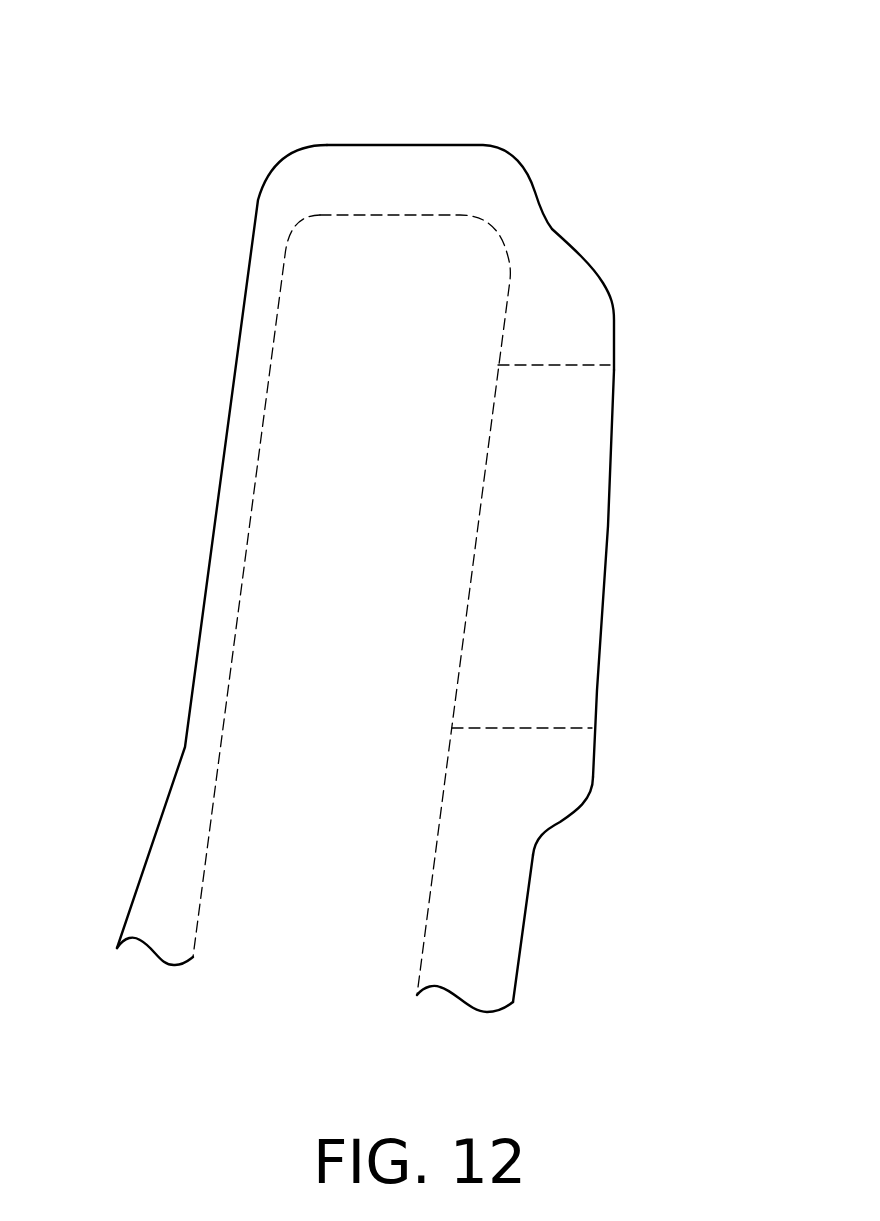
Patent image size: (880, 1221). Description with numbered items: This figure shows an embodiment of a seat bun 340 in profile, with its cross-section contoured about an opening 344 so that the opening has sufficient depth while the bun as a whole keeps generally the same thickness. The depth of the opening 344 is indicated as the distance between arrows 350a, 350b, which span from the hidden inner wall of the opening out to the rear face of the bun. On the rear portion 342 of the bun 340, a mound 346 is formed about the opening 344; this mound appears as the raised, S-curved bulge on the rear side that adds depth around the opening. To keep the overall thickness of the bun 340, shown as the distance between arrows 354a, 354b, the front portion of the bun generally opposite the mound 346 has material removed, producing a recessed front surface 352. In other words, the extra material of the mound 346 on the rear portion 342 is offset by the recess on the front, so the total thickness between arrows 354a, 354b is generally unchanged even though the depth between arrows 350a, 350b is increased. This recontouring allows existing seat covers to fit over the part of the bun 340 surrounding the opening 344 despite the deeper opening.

The bun 340 is at (660, 103).
The rear portion 342 is at (652, 918).
The opening 344 is at (540, 615).
The mound 346 is at (575, 830).
The arrow 350a is at (462, 527).
The arrow 350b is at (619, 526).
The recessed front surface 352 is at (168, 569).
The arrow 354a is at (216, 412).
The arrow 354b is at (623, 412).